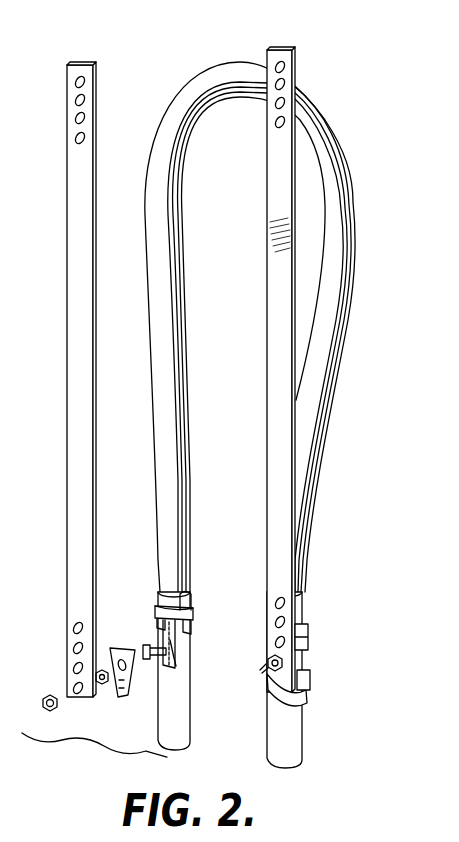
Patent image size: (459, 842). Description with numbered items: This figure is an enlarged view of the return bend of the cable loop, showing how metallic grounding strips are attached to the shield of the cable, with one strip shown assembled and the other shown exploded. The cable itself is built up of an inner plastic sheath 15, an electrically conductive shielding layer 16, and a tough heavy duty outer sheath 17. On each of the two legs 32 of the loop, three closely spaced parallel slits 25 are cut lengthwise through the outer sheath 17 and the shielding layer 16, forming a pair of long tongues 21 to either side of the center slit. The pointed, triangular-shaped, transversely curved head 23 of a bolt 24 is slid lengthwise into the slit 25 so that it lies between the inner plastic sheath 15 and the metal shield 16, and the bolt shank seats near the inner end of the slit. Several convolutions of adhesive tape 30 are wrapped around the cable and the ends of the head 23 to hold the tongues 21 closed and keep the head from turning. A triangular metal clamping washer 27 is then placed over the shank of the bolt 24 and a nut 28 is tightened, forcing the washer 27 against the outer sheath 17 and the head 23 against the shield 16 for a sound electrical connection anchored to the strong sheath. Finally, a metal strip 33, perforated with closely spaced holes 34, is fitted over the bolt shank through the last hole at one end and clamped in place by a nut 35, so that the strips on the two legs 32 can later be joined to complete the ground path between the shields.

The inner plastic sheath 15 is at (190, 592).
The electrically conductive shielding layer 16 is at (193, 609).
The outer sheath 17 is at (189, 626).
The tongues 21 is at (157, 622).
The bolt head 23 is at (185, 601).
The bolt 24 is at (153, 658).
The slits 25 is at (173, 656).
The clamping washer 27 is at (121, 697).
The nut 28 is at (100, 685).
The adhesive tape 30 is at (309, 634).
The legs 32 is at (272, 727).
The metal strips 33 is at (94, 480).
The holes 34 is at (84, 100).
The nut 35 is at (50, 695).